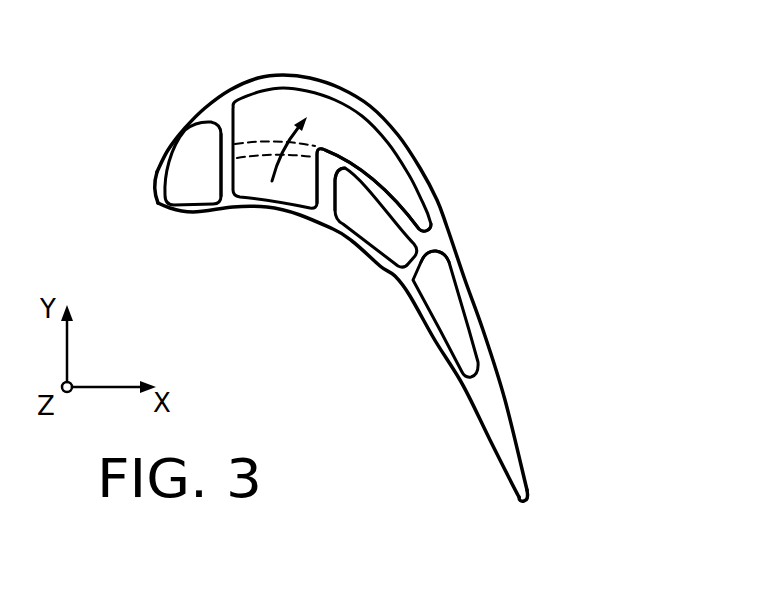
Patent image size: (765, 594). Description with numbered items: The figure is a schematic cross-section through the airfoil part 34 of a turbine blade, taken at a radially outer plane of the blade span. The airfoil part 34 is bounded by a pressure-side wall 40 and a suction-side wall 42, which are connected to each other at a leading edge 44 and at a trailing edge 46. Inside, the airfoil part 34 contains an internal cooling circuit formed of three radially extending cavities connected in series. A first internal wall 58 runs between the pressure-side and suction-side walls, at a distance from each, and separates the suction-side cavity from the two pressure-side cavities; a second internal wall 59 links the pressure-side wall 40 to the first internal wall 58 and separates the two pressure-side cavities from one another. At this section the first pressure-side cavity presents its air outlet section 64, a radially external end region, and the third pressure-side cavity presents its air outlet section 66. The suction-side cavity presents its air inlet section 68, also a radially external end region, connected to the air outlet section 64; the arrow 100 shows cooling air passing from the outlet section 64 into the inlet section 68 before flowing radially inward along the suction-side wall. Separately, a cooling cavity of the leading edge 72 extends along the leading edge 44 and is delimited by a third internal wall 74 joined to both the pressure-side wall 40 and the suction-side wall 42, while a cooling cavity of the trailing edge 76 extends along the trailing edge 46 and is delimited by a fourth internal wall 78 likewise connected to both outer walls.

The airfoil part 34 is at (607, 203).
The pressure-side wall 40 is at (437, 333).
The suction-side wall 42 is at (387, 132).
The leading edge 44 is at (153, 193).
The trailing edge 46 is at (527, 499).
The first internal wall 58 is at (387, 197).
The second internal wall 59 is at (340, 196).
The air outlet section 64 is at (253, 165).
The air outlet section 66 is at (397, 252).
The air inlet section 68 is at (305, 107).
The cooling cavity of the leading edge 72 is at (193, 170).
The third internal wall 74 is at (230, 180).
The cooling cavity of the trailing edge 76 is at (460, 315).
The fourth internal wall 78 is at (413, 263).
The arrow 100 is at (273, 163).